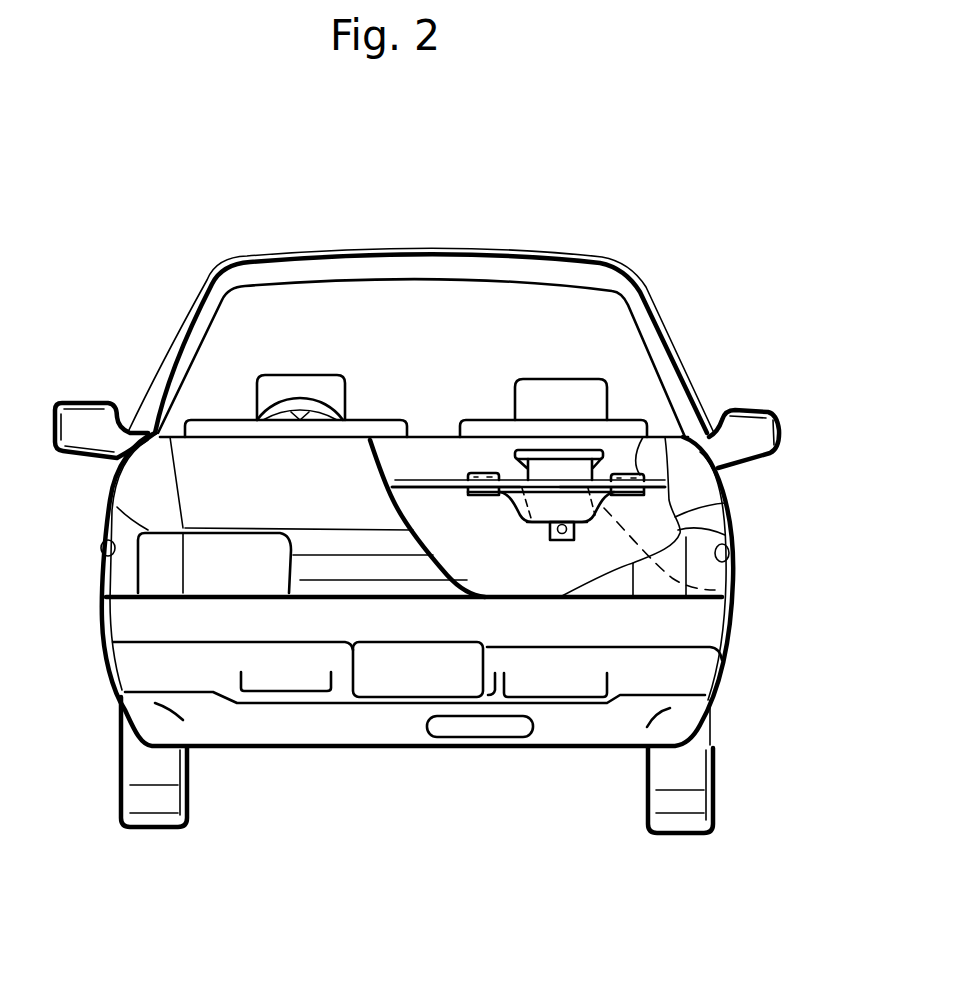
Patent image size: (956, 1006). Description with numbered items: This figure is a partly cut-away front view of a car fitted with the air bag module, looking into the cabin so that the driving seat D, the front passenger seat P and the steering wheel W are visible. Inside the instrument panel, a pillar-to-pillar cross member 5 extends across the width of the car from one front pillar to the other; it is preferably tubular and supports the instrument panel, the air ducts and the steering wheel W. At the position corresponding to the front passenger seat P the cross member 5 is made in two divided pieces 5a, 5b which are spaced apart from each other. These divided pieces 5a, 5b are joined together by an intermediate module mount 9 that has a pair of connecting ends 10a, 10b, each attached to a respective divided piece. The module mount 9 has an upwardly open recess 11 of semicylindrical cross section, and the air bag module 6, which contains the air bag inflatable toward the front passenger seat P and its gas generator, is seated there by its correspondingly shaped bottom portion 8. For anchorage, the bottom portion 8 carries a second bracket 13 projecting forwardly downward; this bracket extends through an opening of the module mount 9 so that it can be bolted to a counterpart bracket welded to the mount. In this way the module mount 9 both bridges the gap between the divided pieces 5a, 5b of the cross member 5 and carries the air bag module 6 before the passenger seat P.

The pillar-to-pillar member (cross member) 5 is at (528, 483).
The divided piece 5a is at (670, 497).
The divided piece 5b is at (425, 478).
The air bag module 6 is at (563, 452).
The bottom portion 8 is at (728, 589).
The intermediate module mount 9 is at (523, 530).
The connecting end 10a is at (640, 473).
The connecting end 10b is at (487, 472).
The recess 11 is at (538, 525).
The second bracket 13 is at (550, 542).
The driving seat D is at (296, 374).
The front passenger seat P is at (552, 377).
The steering wheel W is at (330, 412).